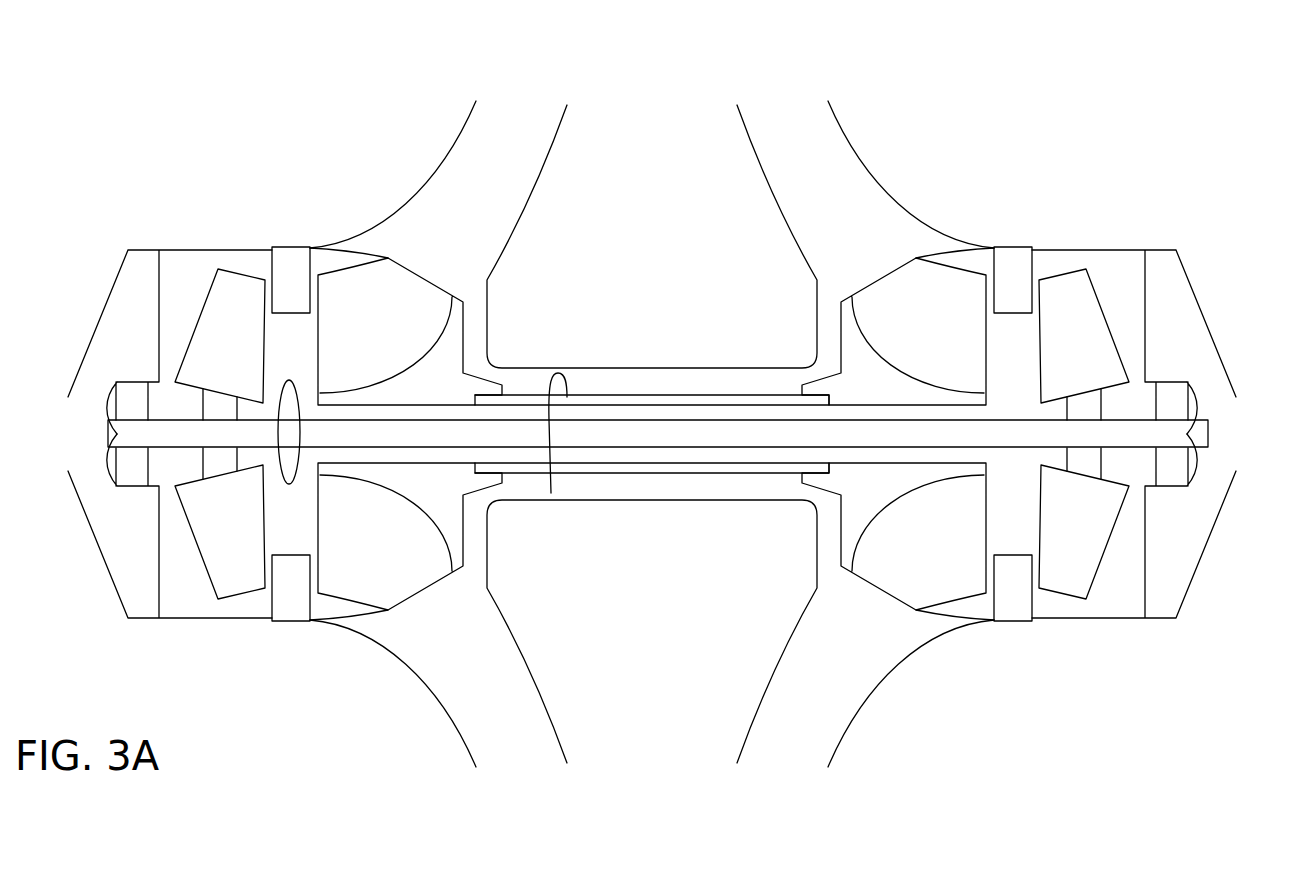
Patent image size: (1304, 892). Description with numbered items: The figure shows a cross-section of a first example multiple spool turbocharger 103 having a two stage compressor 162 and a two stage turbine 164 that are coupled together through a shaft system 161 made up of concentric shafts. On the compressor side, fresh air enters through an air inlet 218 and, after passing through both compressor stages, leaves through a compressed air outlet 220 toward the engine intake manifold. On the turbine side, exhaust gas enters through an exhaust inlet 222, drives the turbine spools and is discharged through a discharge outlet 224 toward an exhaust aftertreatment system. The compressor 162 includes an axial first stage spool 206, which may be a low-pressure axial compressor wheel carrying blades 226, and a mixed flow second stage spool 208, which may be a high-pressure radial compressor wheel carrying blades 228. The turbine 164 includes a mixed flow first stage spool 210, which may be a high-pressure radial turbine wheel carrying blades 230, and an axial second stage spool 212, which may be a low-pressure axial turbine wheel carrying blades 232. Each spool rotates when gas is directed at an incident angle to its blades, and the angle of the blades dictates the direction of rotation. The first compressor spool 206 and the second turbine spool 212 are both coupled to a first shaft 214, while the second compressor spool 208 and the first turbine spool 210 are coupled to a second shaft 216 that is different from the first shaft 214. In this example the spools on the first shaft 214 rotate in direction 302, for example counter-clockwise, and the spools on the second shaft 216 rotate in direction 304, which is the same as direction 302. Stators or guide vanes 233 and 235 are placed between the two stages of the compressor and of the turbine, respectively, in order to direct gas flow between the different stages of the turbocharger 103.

The multiple spool turbocharger 103 is at (1198, 146).
The shaft system 161 is at (637, 345).
The compressor 162 is at (242, 228).
The turbine 164 is at (1040, 222).
The first compressor spool 206 is at (216, 268).
The second compressor spool 208 is at (388, 258).
The first turbine spool 210 is at (925, 267).
The second turbine spool 212 is at (1092, 280).
The first shaft 214 is at (728, 447).
The second shaft 216 is at (677, 395).
The air inlet 218 is at (98, 369).
The compressed air outlet 220 is at (500, 170).
The exhaust inlet 222 is at (791, 165).
The discharge outlet 224 is at (1195, 368).
The blades 226 is at (220, 434).
The blades 228 is at (410, 434).
The blades 230 is at (894, 434).
The blades 232 is at (1084, 434).
The stators or guide vanes 233 is at (306, 248).
The stators or guide vanes 235 is at (1010, 247).
The direction of rotation 302 is at (298, 462).
The direction of rotation 304 is at (551, 493).